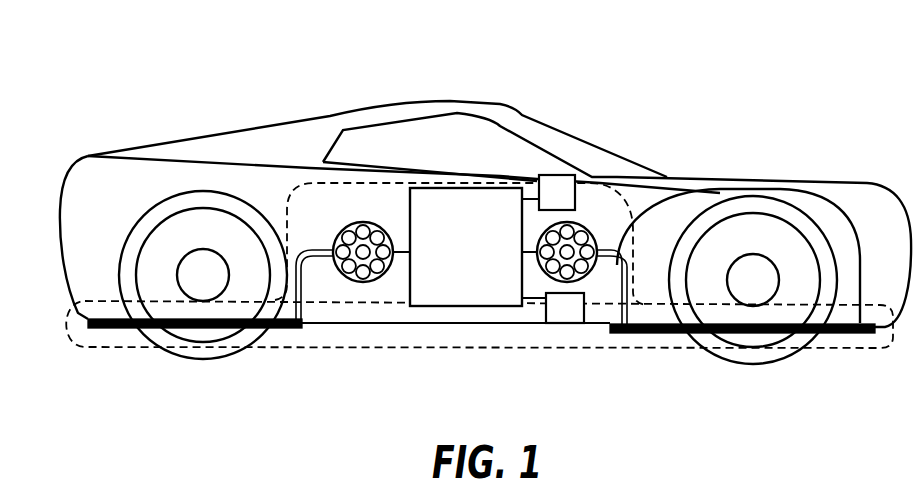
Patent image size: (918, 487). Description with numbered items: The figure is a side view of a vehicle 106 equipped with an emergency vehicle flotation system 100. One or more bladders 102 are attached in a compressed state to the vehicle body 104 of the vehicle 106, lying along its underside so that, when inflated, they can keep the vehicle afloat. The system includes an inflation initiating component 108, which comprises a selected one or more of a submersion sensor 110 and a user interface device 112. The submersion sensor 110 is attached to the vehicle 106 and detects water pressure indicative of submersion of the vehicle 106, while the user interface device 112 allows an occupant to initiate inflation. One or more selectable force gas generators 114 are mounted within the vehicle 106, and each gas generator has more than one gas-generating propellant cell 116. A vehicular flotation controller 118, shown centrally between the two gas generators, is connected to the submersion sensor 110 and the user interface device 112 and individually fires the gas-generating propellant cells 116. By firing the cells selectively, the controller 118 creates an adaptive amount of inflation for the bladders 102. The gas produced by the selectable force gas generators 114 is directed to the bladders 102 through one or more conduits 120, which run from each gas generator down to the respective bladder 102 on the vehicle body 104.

The emergency vehicle flotation system 100 is at (73, 312).
The bladders 102 is at (108, 333).
The vehicle body 104 is at (60, 217).
The vehicle 106 is at (147, 143).
The inflation initiating component 108 is at (538, 321).
The submersion sensor 110 is at (562, 327).
The user interface device 112 is at (550, 175).
The selectable force gas generators 114 is at (583, 223).
The gas-generating propellant cells 116 is at (347, 229).
The vehicular flotation controller 118 is at (450, 292).
The conduits 120 is at (308, 300).